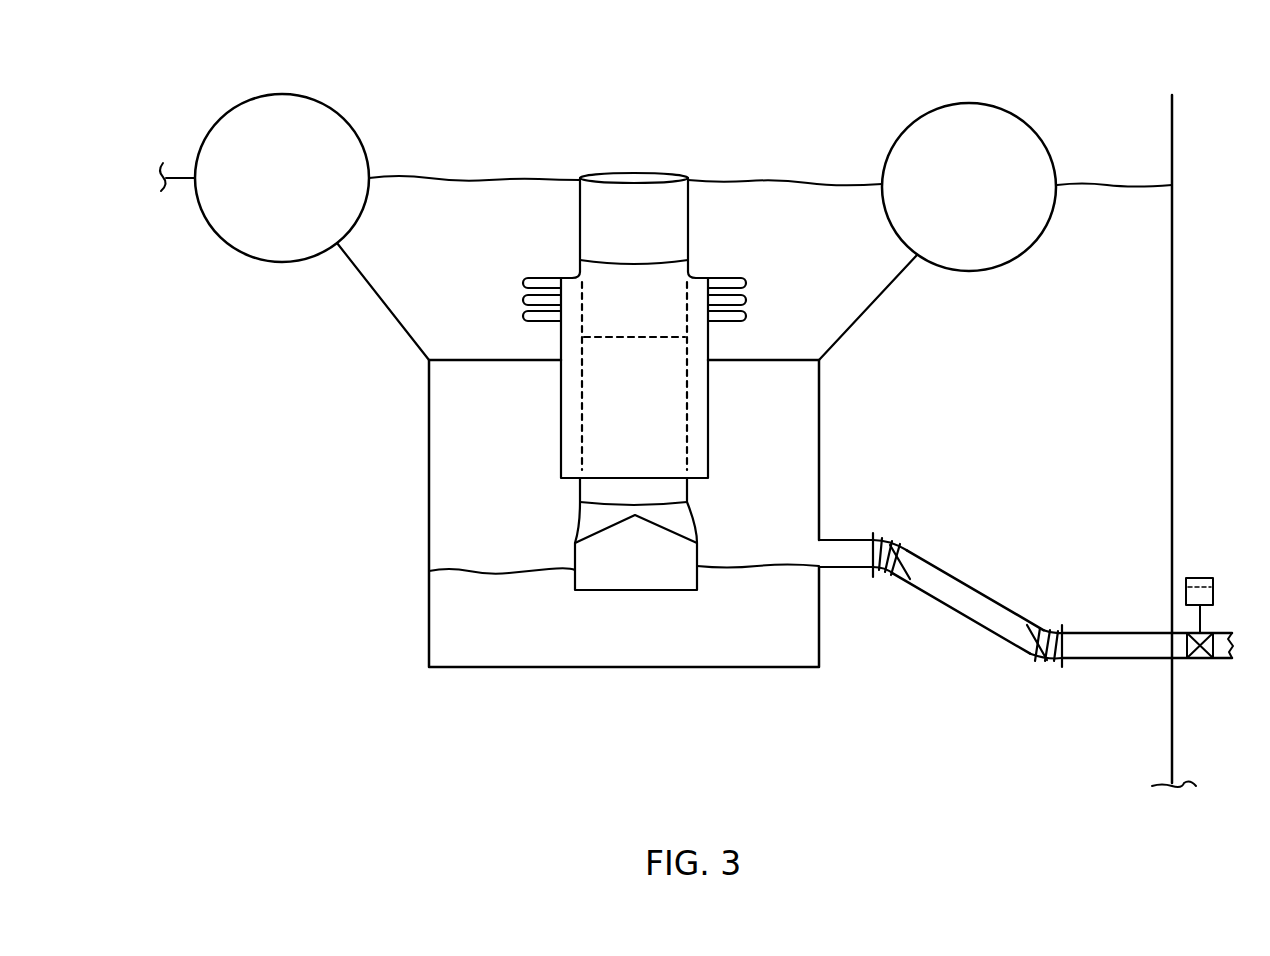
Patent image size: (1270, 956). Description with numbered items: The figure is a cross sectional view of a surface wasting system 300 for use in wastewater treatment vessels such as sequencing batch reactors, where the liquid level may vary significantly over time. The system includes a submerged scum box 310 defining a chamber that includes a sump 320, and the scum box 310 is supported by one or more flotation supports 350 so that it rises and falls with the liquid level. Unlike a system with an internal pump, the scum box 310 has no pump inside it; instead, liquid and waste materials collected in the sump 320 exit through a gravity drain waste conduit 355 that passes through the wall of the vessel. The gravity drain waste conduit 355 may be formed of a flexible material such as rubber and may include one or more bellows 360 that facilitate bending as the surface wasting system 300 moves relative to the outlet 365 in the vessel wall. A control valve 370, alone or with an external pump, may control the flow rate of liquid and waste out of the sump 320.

The surface wasting system 300 is at (819, 98).
The submerged scum box 310 is at (429, 532).
The sump 320 is at (533, 635).
The flotation supports 350 is at (296, 180).
The gravity drain waste conduit 355 is at (925, 580).
The bellows 360 is at (1040, 657).
The outlet 365 is at (1168, 633).
The control valve 370 is at (1205, 578).